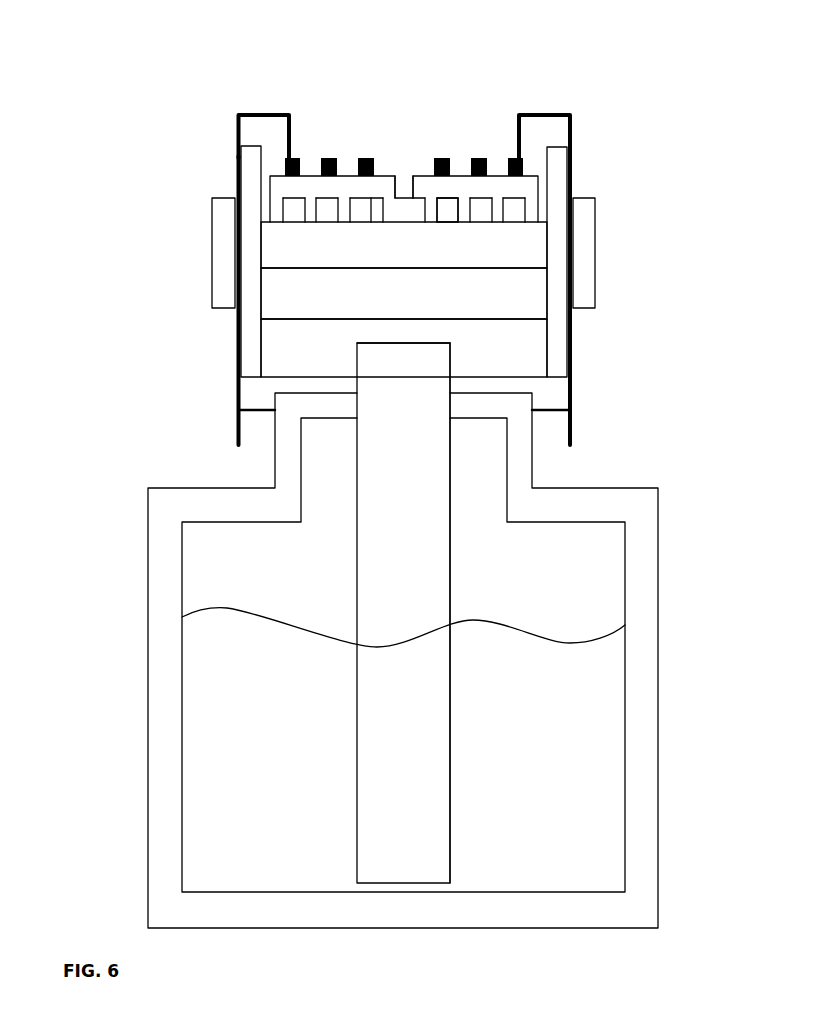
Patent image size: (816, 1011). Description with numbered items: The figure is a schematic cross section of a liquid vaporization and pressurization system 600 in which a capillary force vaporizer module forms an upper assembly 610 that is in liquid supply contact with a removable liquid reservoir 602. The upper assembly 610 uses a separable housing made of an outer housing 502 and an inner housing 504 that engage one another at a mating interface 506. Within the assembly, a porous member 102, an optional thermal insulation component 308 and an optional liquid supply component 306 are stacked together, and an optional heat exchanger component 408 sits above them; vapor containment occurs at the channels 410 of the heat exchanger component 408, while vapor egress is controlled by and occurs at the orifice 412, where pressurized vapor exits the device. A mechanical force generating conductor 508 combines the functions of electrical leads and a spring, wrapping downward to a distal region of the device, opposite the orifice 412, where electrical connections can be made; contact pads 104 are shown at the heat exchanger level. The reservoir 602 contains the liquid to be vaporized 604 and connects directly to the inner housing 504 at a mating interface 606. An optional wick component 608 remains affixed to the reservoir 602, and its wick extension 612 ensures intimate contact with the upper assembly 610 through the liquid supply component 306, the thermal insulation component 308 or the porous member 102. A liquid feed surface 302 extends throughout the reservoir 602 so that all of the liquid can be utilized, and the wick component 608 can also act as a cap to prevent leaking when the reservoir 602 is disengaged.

The liquid vaporization and pressurization system 600 is at (145, 33).
The upper assembly 610 is at (108, 110).
The mechanical force generating conductor 508 is at (573, 115).
The mating interface 506 is at (573, 283).
The inner housing 504 is at (550, 390).
The outer housing 502 is at (583, 225).
The porous member 102 is at (292, 238).
The thermal insulation component 308 is at (292, 292).
The liquid supply component 306 is at (292, 348).
The heat exchanger component 408 is at (513, 190).
The orifice 412 is at (405, 187).
The channels 410 is at (448, 210).
The contact pads 104 is at (478, 178).
The liquid reservoir 602 is at (168, 585).
The mating interface 606 is at (497, 395).
The liquid to be vaporized 604 is at (257, 699).
The wick component 608 is at (388, 750).
The wick extension 612 is at (407, 343).
The liquid feed surface 302 is at (450, 768).